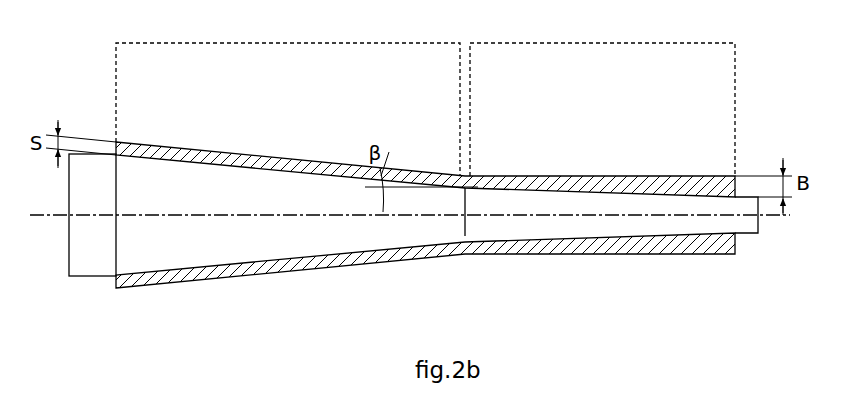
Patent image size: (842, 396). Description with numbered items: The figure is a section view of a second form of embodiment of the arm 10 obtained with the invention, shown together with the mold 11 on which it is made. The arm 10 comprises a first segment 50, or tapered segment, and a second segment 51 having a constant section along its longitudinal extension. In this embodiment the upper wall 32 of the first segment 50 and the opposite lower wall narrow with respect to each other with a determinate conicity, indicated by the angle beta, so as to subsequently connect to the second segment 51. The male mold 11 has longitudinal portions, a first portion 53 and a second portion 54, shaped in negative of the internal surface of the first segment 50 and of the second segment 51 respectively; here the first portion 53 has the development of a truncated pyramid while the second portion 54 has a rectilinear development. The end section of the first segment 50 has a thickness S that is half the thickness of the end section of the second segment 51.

The arm 10 is at (204, 293).
The mold 11 is at (636, 222).
The upper wall 32 is at (527, 177).
The first segment 50 is at (329, 44).
The second segment 51 is at (553, 44).
The first portion 53 is at (286, 243).
The second portion 54 is at (585, 229).